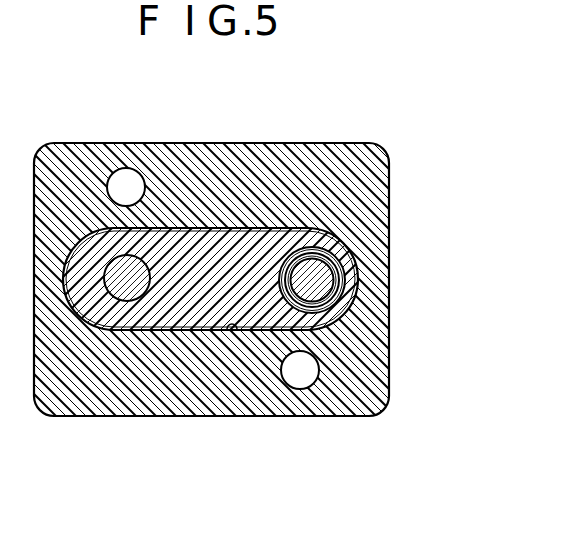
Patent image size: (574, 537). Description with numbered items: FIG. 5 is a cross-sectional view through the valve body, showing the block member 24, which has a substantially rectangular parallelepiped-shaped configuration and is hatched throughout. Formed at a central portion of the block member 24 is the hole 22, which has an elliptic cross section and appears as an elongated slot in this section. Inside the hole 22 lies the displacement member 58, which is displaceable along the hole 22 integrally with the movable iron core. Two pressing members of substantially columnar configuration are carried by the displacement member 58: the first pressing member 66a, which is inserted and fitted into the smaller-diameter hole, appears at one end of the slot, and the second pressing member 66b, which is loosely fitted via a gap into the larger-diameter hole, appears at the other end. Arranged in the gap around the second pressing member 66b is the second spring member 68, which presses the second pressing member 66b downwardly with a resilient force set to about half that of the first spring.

The block member 24 is at (370, 198).
The displacement member 58 is at (229, 278).
The hole 22 is at (238, 331).
The first pressing member 66a is at (128, 280).
The second pressing member 66b is at (317, 282).
The second spring member 68 is at (330, 318).